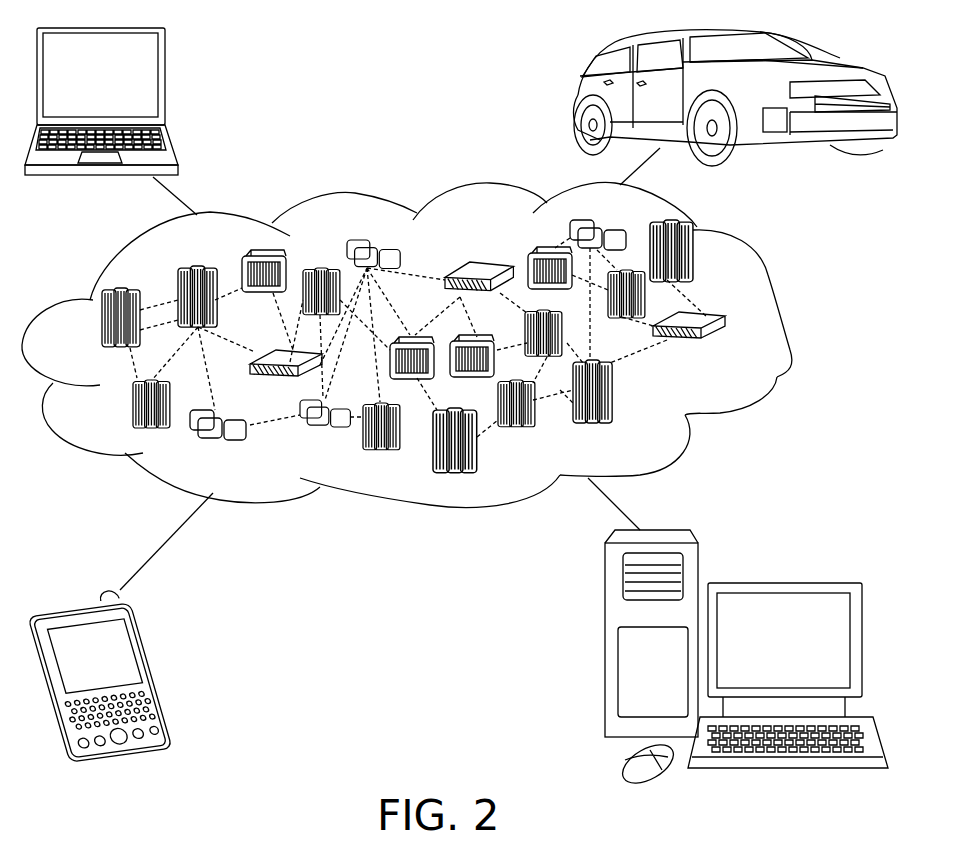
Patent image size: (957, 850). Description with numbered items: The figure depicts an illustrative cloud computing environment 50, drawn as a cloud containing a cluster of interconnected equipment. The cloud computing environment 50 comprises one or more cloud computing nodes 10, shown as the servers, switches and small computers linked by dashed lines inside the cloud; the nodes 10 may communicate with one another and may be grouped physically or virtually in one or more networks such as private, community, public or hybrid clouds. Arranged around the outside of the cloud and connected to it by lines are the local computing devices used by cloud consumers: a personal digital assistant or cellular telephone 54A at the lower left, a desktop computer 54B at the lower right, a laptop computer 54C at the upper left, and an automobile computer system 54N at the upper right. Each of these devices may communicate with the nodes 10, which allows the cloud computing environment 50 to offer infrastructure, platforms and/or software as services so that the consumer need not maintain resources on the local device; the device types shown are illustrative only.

The cloud computing node 10 is at (728, 352).
The cloud computing environment 50 is at (780, 328).
The personal digital assistant (PDA) or cellular telephone 54A is at (155, 666).
The desktop computer 54B is at (780, 583).
The laptop computer 54C is at (165, 84).
The automobile computer system 54N is at (577, 97).